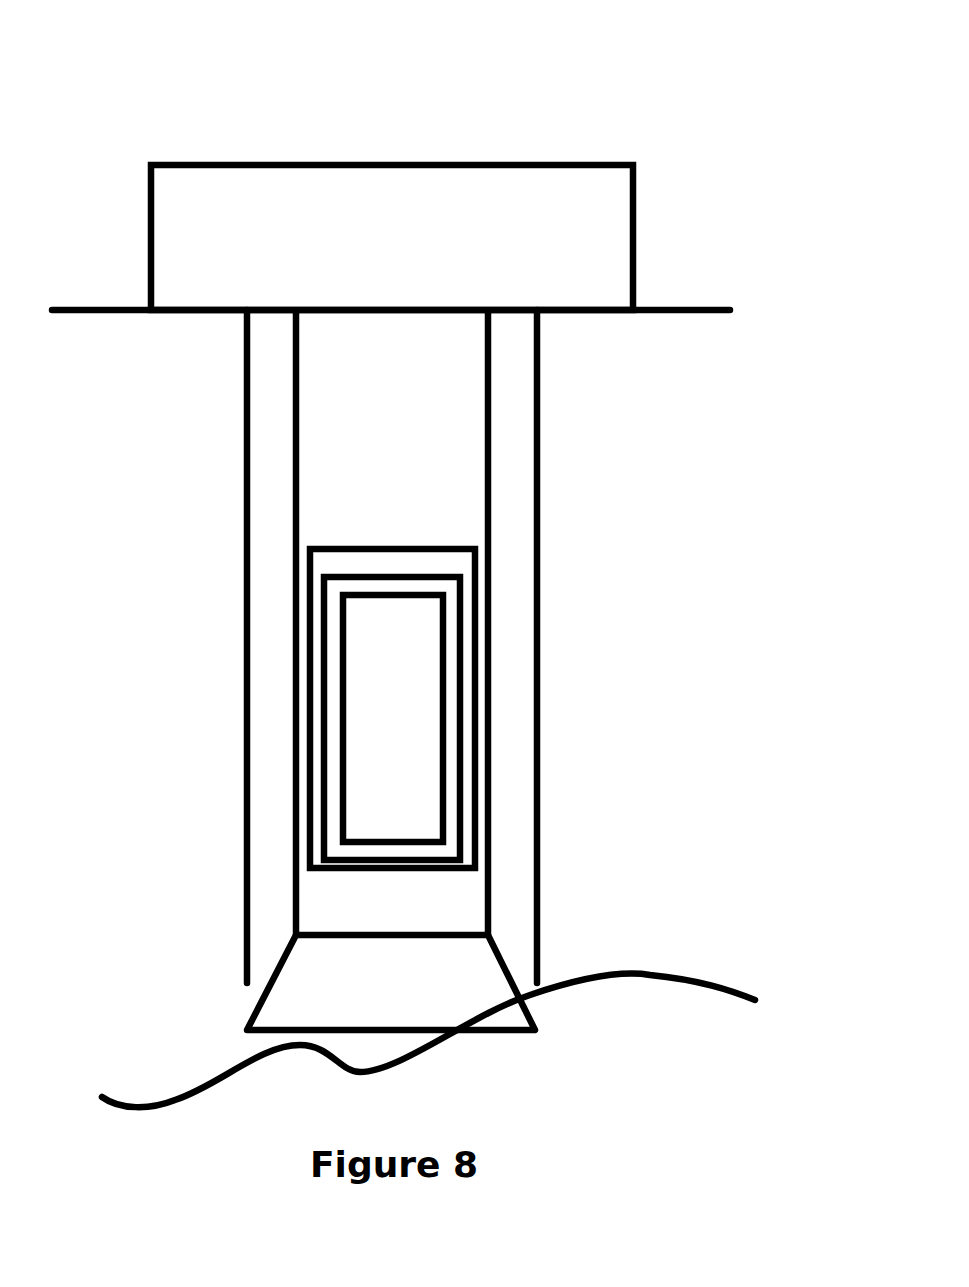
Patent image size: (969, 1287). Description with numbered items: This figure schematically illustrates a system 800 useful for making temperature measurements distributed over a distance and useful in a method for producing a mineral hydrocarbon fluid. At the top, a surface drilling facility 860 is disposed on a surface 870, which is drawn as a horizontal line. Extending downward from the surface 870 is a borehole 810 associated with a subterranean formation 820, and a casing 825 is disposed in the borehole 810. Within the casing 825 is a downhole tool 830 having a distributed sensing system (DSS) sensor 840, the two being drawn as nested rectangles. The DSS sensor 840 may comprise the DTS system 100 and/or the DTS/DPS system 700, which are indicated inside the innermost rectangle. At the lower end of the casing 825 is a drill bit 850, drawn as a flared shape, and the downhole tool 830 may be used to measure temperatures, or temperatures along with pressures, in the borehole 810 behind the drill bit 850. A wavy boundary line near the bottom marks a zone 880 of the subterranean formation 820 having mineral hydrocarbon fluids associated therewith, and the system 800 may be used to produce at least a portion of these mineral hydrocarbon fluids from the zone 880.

The system 800 is at (180, 97).
The surface drilling facility 860 is at (648, 187).
The surface 870 is at (667, 298).
The borehole 810 is at (552, 512).
The casing 825 is at (503, 435).
The drill bit 850 is at (547, 1013).
The subterranean formation 820 is at (121, 561).
The downhole tool 830 is at (333, 540).
The distributed sensing system (DSS) sensor 840 is at (360, 570).
The DTS system 100 is at (393, 718).
The DTS/DPS system 700 is at (394, 758).
The zone 880 is at (428, 1041).